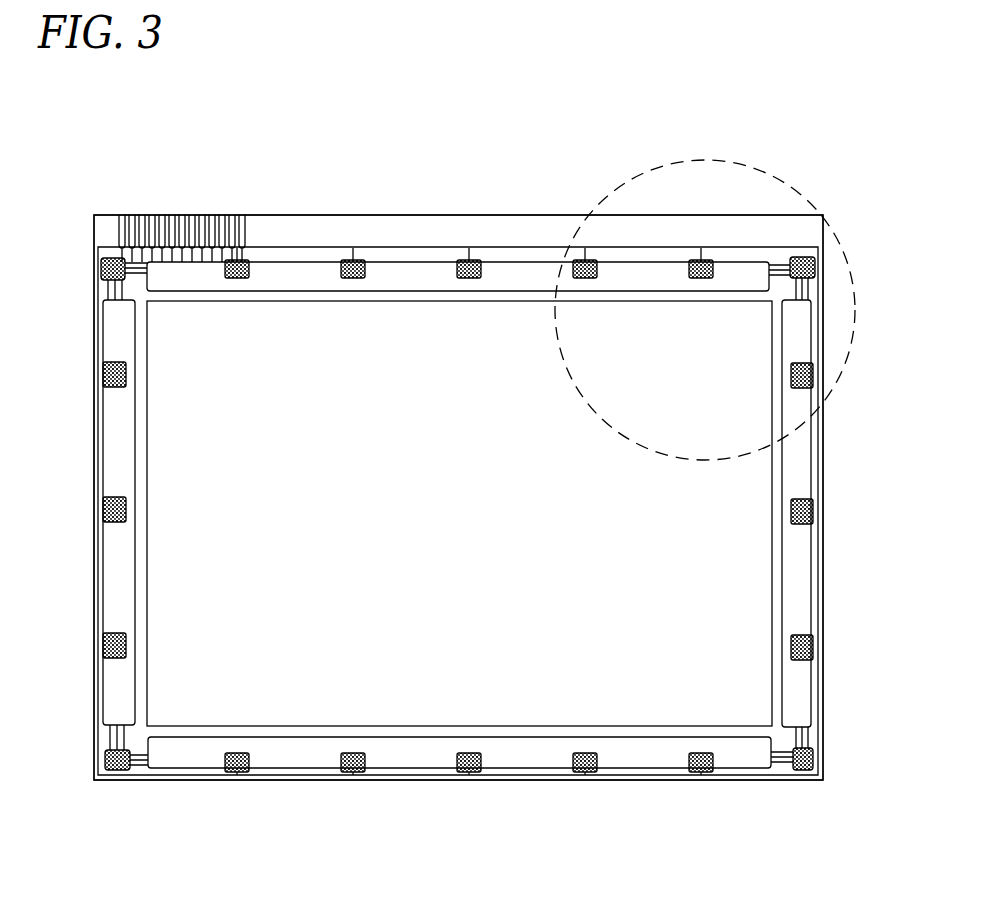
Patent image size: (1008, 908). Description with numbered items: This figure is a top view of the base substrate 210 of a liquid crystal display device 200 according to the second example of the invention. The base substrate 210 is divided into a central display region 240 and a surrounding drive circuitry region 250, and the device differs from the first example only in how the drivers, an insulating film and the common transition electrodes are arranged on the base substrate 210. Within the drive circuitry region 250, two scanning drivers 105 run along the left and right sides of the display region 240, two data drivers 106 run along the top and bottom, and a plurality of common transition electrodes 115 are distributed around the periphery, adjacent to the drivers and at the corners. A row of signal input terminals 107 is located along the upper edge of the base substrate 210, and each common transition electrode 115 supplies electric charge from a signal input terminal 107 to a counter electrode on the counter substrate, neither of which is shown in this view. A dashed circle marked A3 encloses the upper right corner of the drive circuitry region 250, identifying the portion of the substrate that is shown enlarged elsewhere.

The liquid crystal display device 200 is at (778, 96).
The base substrate 210 is at (309, 782).
The drive circuitry region 250 is at (800, 473).
The display region 240 is at (459, 513).
The signal input terminal 107 is at (186, 221).
The data driver 106 is at (469, 294).
The scanning driver 105 is at (142, 563).
The common transition electrode 115 is at (813, 522).
The enlarged region A3 is at (705, 293).